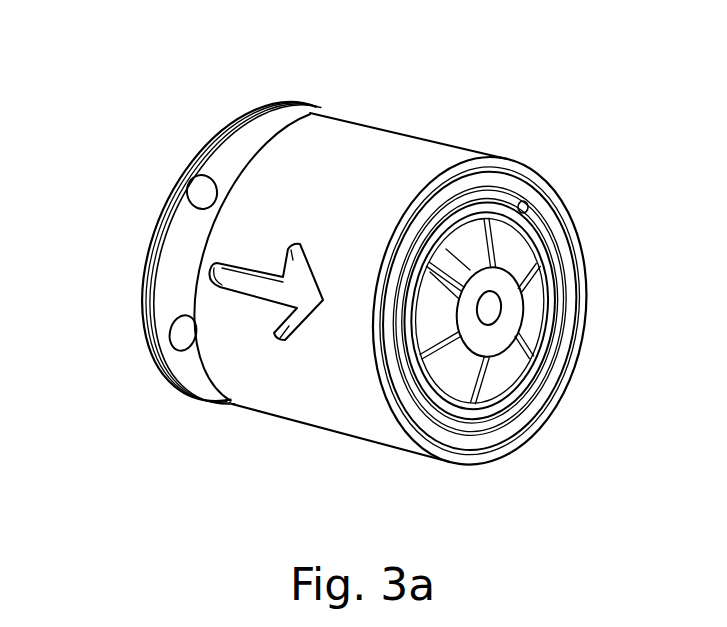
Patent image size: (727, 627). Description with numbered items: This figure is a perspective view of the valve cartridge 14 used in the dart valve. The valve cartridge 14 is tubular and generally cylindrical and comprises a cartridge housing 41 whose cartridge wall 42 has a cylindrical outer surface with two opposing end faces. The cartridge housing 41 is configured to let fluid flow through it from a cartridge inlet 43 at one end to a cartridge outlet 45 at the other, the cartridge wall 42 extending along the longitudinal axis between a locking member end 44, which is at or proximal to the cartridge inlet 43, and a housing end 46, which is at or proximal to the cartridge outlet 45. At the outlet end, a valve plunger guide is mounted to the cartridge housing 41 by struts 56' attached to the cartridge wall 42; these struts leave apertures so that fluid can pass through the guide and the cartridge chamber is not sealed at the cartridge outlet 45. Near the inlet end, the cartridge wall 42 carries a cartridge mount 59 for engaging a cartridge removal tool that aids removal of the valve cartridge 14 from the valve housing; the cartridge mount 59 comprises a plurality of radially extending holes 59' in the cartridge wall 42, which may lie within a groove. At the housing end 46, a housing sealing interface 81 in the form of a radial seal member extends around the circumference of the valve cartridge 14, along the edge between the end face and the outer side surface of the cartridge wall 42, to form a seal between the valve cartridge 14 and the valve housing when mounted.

The valve cartridge 14 is at (486, 120).
The cartridge housing 41 is at (387, 128).
The cartridge wall 42 is at (303, 427).
The cartridge inlet 43 is at (138, 235).
The locking member end 44 is at (133, 280).
The cartridge outlet 45 is at (520, 337).
The housing end 46 is at (520, 412).
The struts 56' is at (534, 302).
The cartridge mount 59 is at (229, 207).
The radially extending holes 59' is at (175, 226).
The housing sealing interface 81 is at (443, 452).